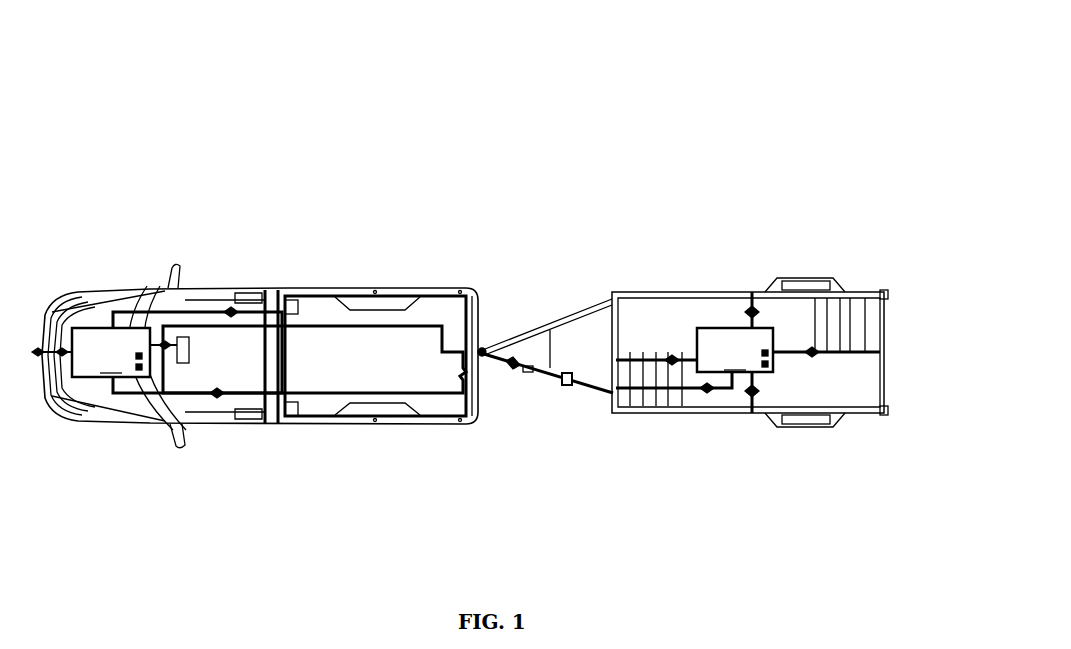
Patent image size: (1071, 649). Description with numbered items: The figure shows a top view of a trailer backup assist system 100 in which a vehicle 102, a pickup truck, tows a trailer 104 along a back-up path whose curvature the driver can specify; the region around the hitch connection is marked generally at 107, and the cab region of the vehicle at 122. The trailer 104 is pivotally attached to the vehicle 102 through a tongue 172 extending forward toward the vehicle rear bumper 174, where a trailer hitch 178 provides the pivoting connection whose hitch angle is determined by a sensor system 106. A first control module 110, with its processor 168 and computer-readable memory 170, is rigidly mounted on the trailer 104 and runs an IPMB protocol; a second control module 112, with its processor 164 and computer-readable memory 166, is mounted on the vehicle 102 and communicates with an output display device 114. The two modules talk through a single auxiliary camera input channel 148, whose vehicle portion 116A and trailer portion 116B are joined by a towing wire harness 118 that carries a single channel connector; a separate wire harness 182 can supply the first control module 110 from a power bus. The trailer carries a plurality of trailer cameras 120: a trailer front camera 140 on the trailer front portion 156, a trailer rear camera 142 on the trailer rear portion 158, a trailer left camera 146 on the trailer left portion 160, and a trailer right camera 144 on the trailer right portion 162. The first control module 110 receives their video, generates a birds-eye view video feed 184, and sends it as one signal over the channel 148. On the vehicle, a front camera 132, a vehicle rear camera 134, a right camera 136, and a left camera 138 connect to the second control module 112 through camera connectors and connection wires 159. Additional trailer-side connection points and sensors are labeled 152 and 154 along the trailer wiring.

The trailer backup assist system 100 is at (943, 60).
The vehicle 102 is at (437, 290).
The trailer 104 is at (650, 292).
The sensor system 106 is at (880, 240).
The hitch connection area 107 is at (587, 122).
The first control module 110 is at (735, 350).
The second control module 112 is at (111, 352).
The output display device 114 is at (192, 338).
The vehicle portion of the single auxiliary camera input channel 116A is at (415, 396).
The trailer portion of the single auxiliary camera input channel 116B is at (620, 393).
The towing wire harness 118 is at (486, 354).
The trailer cameras 120 is at (752, 237).
The vehicle cab portion 122 is at (393, 208).
The front camera 132 is at (38, 357).
The vehicle rear camera 134 is at (442, 348).
The right camera 136 is at (296, 300).
The left camera 138 is at (296, 416).
The trailer front camera 140 is at (604, 372).
The trailer rear camera 142 is at (882, 355).
The trailer right camera 144 is at (754, 298).
The trailer left camera 146 is at (752, 398).
The single auxiliary camera input channel 148 is at (675, 400).
The trailer sensor 152 is at (632, 372).
The trailer wiring bus 154 is at (697, 335).
The trailer front portion 156 is at (593, 296).
The trailer rear portion 158 is at (905, 347).
The connection wires 159 is at (313, 327).
The trailer left portion 160 is at (736, 466).
The trailer right portion 162 is at (784, 247).
The processor 164 is at (141, 357).
The computer-readable memory 166 is at (141, 368).
The processor 168 is at (768, 356).
The computer-readable memory 170 is at (768, 367).
The tongue 172 is at (484, 351).
The vehicle rear bumper 174 is at (482, 347).
The trailer hitch 178 is at (486, 372).
The wire harness 182 is at (512, 334).
The birds-eye view video feed 184 is at (565, 386).